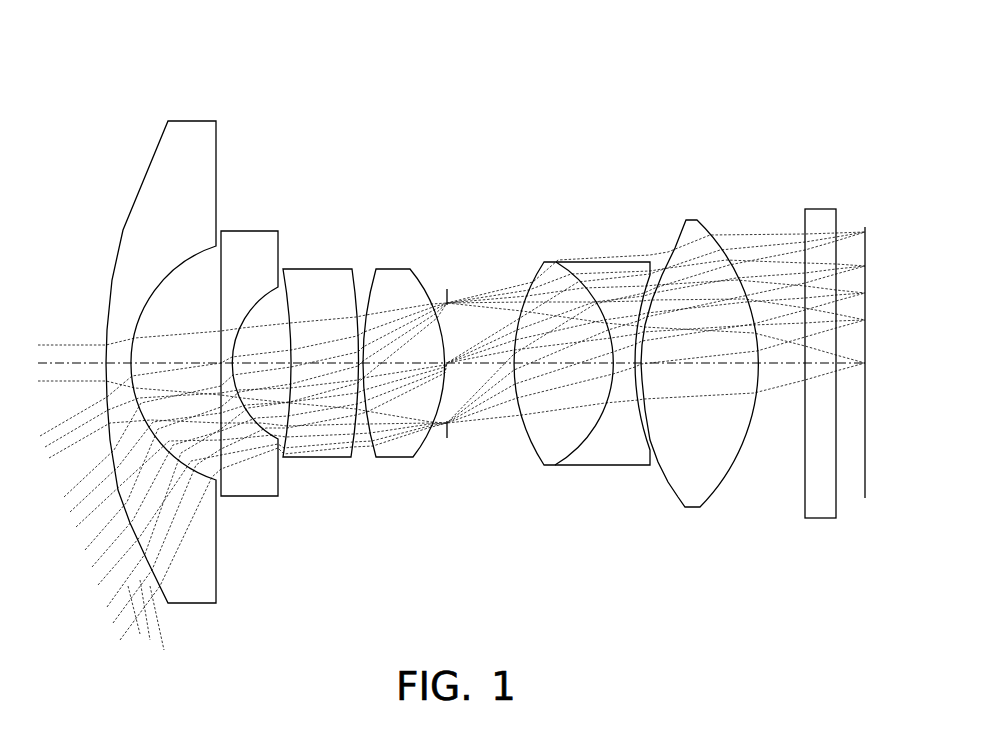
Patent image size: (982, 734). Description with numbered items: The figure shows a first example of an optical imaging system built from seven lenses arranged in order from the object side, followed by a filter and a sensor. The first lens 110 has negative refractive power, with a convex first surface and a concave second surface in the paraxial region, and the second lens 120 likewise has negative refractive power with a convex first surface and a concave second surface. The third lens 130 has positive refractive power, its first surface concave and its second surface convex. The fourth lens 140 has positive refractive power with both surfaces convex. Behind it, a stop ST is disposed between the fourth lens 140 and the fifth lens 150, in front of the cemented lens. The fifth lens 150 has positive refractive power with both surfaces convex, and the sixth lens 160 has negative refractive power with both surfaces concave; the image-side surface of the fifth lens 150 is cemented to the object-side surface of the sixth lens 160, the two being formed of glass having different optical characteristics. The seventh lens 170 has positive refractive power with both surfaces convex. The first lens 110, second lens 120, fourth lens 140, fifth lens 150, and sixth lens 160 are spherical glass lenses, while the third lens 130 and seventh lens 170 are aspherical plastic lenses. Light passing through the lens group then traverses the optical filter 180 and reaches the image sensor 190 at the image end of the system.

The first lens 110 is at (188, 121).
The second lens 120 is at (247, 231).
The third lens 130 is at (313, 269).
The fourth lens 140 is at (389, 269).
The fifth lens 150 is at (536, 272).
The sixth lens 160 is at (605, 262).
The seventh lens 170 is at (690, 220).
The optical filter 180 is at (820, 209).
The image sensor 190 is at (866, 243).
The stop ST is at (447, 438).